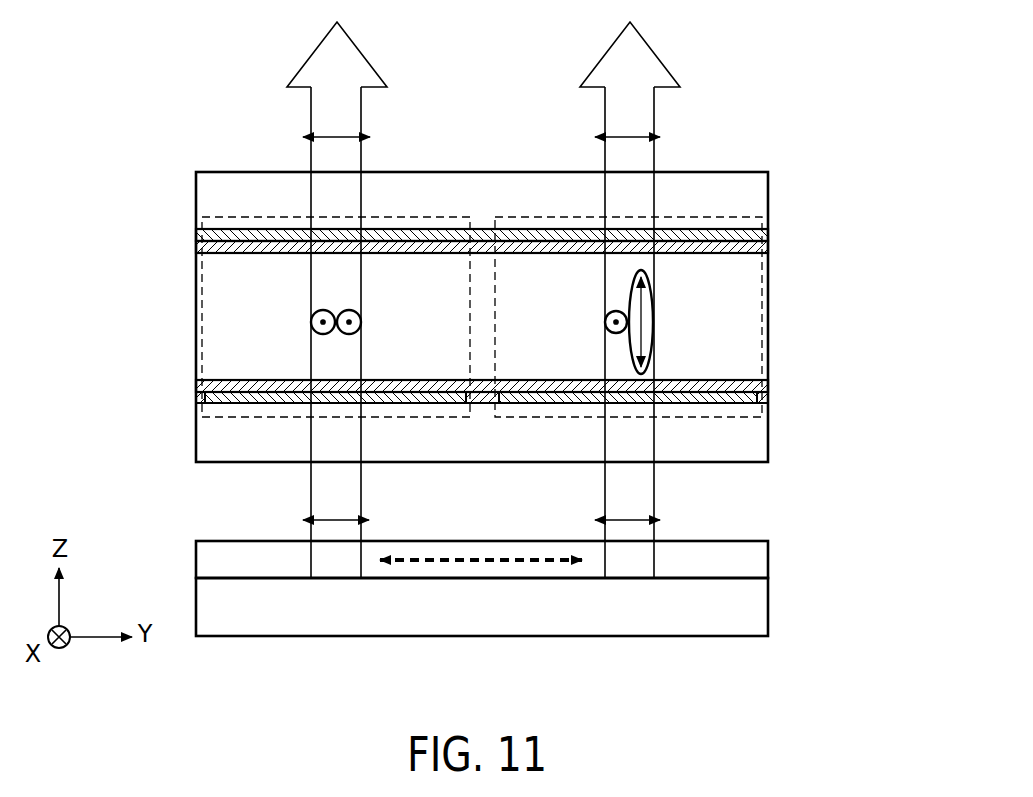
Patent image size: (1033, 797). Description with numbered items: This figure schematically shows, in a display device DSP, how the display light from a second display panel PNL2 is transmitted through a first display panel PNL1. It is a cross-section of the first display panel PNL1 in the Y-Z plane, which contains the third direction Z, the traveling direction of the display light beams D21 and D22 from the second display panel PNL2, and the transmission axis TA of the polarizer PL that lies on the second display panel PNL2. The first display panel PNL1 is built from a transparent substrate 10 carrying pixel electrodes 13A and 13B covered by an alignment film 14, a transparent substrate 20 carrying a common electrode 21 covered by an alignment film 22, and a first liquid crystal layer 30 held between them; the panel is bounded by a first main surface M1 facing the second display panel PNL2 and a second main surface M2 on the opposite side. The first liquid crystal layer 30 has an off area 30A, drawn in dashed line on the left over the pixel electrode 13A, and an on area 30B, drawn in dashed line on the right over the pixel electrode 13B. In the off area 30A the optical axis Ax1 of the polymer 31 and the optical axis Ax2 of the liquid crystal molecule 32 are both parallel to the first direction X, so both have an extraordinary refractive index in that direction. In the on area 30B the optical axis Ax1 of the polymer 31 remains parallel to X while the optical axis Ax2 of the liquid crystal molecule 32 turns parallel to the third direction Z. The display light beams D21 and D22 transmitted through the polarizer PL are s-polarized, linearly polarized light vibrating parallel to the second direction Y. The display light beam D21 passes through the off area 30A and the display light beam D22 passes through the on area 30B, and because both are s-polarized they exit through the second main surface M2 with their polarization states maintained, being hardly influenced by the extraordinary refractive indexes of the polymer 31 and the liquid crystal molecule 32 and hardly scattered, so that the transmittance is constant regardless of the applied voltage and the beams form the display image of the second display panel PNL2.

The transparent substrate 10 is at (760, 437).
The pixel electrode 13A is at (407, 403).
The pixel electrode 13B is at (538, 403).
The alignment film 14 is at (740, 383).
The transparent substrate 20 is at (760, 197).
The common electrode 21 is at (482, 227).
The alignment film 22 is at (745, 252).
The first liquid crystal layer 30 is at (768, 310).
The off area 30A is at (418, 217).
The on area 30B is at (529, 215).
The polymer 31 is at (317, 311).
The liquid crystal molecule 32 is at (356, 311).
The optical axis Ax1 is at (311, 322).
The optical axis Ax2 is at (361, 322).
The display light beam D21 is at (362, 56).
The display light beam D22 is at (655, 56).
The display device DSP is at (790, 139).
The first main surface M1 is at (731, 470).
The second main surface M2 is at (727, 166).
The polarizer PL is at (768, 558).
The first display panel PNL1 is at (771, 466).
The second display panel PNL2 is at (768, 612).
The transmission axis TA is at (538, 563).